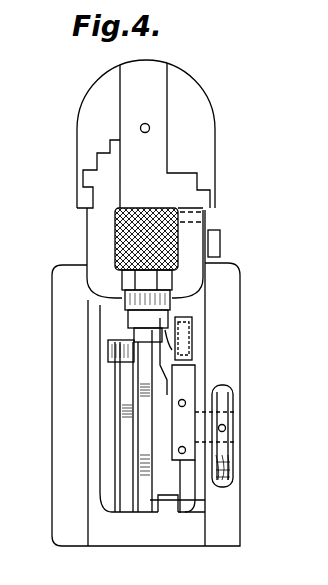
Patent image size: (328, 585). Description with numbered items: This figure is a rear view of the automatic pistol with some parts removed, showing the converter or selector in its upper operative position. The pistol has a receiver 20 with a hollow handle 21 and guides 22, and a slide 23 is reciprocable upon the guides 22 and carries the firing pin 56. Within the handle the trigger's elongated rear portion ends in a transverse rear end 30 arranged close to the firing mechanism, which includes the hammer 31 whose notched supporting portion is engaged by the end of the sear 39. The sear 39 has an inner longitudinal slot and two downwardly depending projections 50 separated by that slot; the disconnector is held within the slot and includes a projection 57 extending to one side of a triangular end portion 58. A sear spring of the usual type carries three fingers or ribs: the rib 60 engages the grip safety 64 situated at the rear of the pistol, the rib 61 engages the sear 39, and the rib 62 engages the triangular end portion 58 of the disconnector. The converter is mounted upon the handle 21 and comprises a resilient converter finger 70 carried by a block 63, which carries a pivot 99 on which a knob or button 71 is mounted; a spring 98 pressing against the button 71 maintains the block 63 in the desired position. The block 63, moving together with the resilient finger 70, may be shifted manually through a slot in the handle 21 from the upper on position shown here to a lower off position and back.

The receiver 20 is at (232, 278).
The hollow handle 21 is at (67, 511).
The guides 22 is at (86, 183).
The slide 23 is at (198, 149).
The transverse rear end 30 is at (106, 364).
The hammer 31 is at (114, 238).
The sear 39 is at (108, 304).
The downwardly depending projections 50 is at (160, 314).
The firing pin 56 is at (149, 125).
The projection 57 is at (107, 344).
The triangular end portion 58 is at (100, 333).
The rib 60 is at (210, 498).
The rib 61 is at (128, 420).
The rib 62 is at (140, 433).
The block 63 is at (218, 442).
The grip safety 64 is at (186, 327).
The resilient converter finger 70 is at (190, 363).
The knob or button 71 is at (225, 403).
The spring 98 is at (228, 466).
The pivot 99 is at (226, 428).